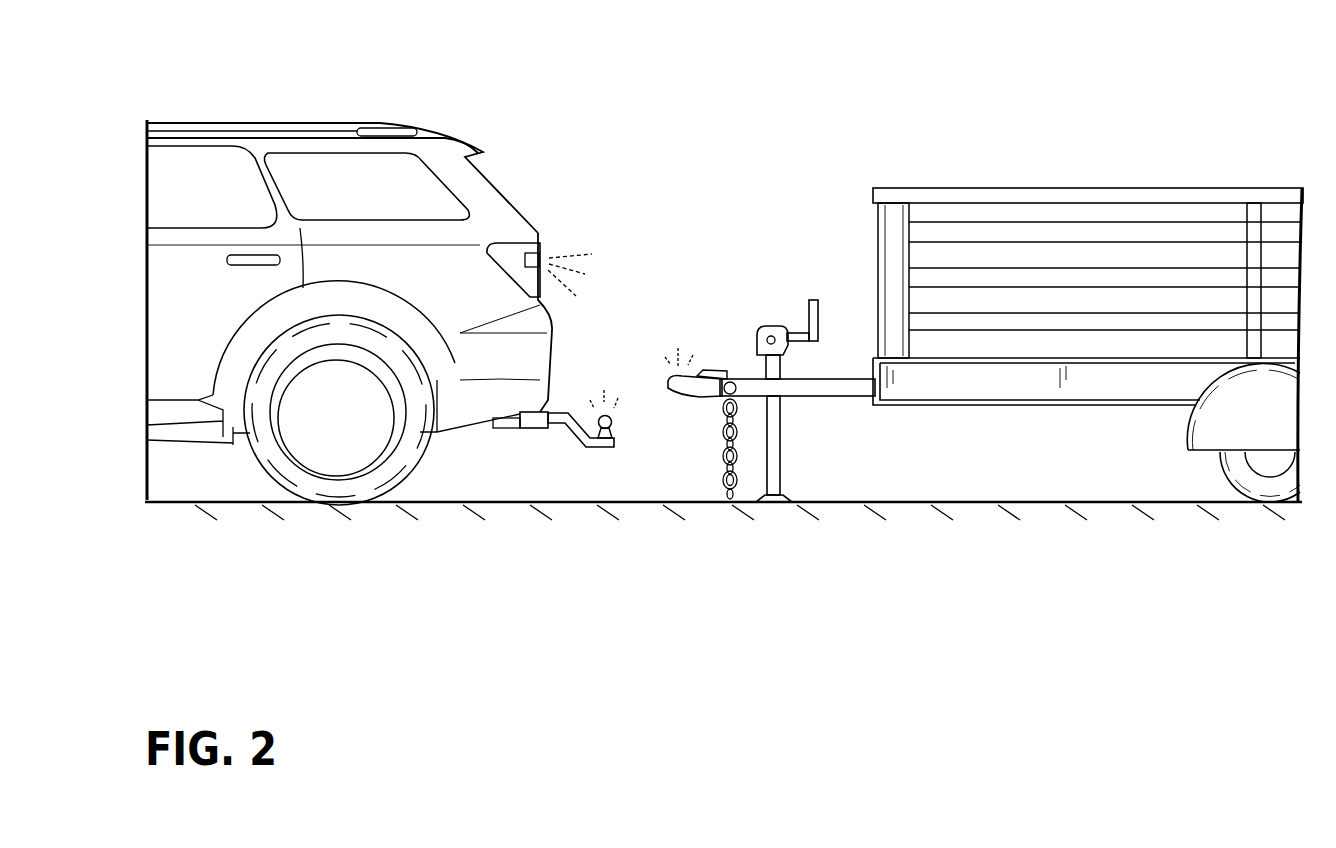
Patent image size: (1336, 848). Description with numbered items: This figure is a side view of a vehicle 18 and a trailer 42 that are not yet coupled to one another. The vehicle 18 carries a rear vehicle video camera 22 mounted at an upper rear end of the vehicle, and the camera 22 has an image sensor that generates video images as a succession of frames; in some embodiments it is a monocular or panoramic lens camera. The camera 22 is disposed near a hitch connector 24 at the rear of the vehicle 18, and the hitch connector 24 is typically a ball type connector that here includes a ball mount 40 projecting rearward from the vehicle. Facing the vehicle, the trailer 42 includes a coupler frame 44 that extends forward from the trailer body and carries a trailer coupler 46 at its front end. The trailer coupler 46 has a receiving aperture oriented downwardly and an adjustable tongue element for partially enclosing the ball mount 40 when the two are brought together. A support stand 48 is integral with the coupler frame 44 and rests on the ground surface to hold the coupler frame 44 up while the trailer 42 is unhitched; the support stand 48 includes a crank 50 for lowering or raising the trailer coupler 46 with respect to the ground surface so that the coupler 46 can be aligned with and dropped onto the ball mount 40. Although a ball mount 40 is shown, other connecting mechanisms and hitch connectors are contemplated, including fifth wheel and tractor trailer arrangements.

The vehicle 18 is at (427, 120).
The rear vehicle video camera 22 is at (557, 240).
The hitch connector 24 is at (573, 443).
The ball mount 40 is at (611, 425).
The trailer 42 is at (956, 173).
The coupler frame 44 is at (853, 378).
The trailer coupler 46 is at (676, 347).
The support stand 48 is at (783, 462).
The crank 50 is at (808, 304).